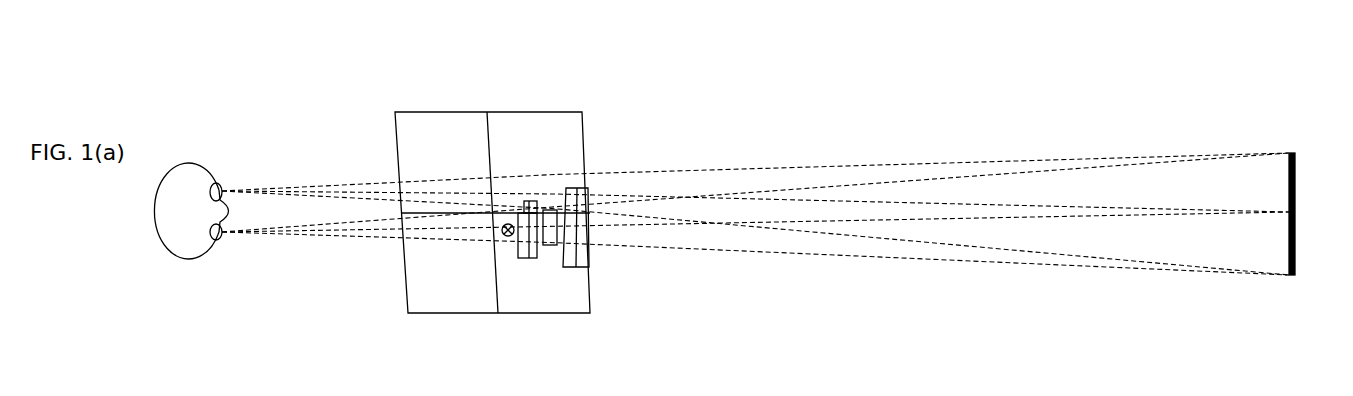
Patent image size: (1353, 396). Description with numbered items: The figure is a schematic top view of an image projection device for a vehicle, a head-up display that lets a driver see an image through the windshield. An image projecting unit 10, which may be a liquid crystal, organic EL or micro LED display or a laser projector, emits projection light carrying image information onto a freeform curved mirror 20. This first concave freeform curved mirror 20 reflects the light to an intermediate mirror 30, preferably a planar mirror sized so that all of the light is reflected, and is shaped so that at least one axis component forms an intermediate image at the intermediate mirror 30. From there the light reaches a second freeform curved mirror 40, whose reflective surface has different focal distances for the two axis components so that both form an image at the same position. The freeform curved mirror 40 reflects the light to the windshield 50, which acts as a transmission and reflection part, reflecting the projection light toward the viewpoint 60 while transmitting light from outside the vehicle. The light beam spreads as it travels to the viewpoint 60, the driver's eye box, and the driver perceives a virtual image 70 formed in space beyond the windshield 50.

The image projecting unit 10 is at (505, 237).
The freeform curved mirror 20 is at (528, 258).
The intermediate mirror 30 is at (553, 245).
The freeform curved mirror 40 is at (573, 268).
The windshield 50 is at (535, 110).
The viewpoint 60 is at (193, 232).
The virtual image 70 is at (1297, 190).